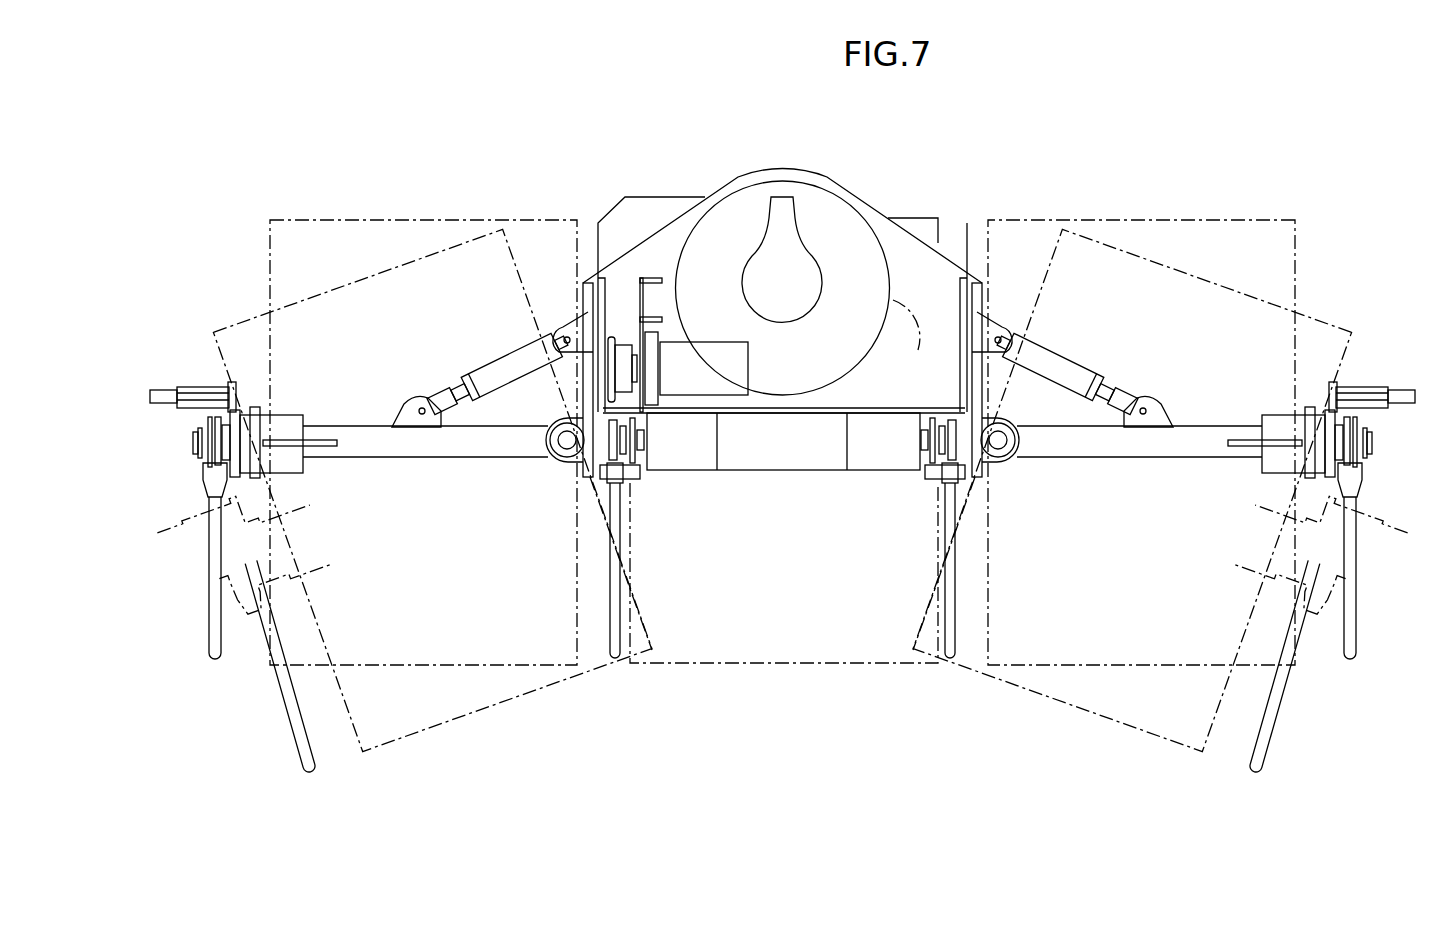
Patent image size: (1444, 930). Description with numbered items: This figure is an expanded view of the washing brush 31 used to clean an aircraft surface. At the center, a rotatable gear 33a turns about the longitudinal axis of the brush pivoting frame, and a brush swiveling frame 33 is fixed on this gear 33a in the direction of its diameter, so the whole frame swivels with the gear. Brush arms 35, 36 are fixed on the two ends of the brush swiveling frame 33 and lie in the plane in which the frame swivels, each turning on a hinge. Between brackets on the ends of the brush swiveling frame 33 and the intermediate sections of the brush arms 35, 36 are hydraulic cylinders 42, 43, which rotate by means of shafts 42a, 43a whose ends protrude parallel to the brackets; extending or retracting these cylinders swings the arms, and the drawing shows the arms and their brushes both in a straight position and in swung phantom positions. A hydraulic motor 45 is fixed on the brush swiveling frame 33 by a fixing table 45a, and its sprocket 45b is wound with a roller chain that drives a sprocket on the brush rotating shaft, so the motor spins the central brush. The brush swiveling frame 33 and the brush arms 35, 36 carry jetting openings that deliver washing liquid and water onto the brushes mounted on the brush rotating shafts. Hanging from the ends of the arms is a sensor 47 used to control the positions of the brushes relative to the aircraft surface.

The washing brush 31 is at (1181, 186).
The brush swiveling frame 33 is at (782, 413).
The gear 33a is at (805, 288).
The brush arm 35 is at (367, 443).
The brush arm 36 is at (1198, 450).
The hydraulic cylinder 42 is at (490, 357).
The shaft 42a is at (563, 333).
The hydraulic cylinder 43 is at (1067, 353).
The shaft 43a is at (995, 335).
The hydraulic motor 45 is at (690, 396).
The fixing table 45a is at (640, 280).
The sprocket 45b is at (612, 337).
The sensor 47 is at (1358, 622).